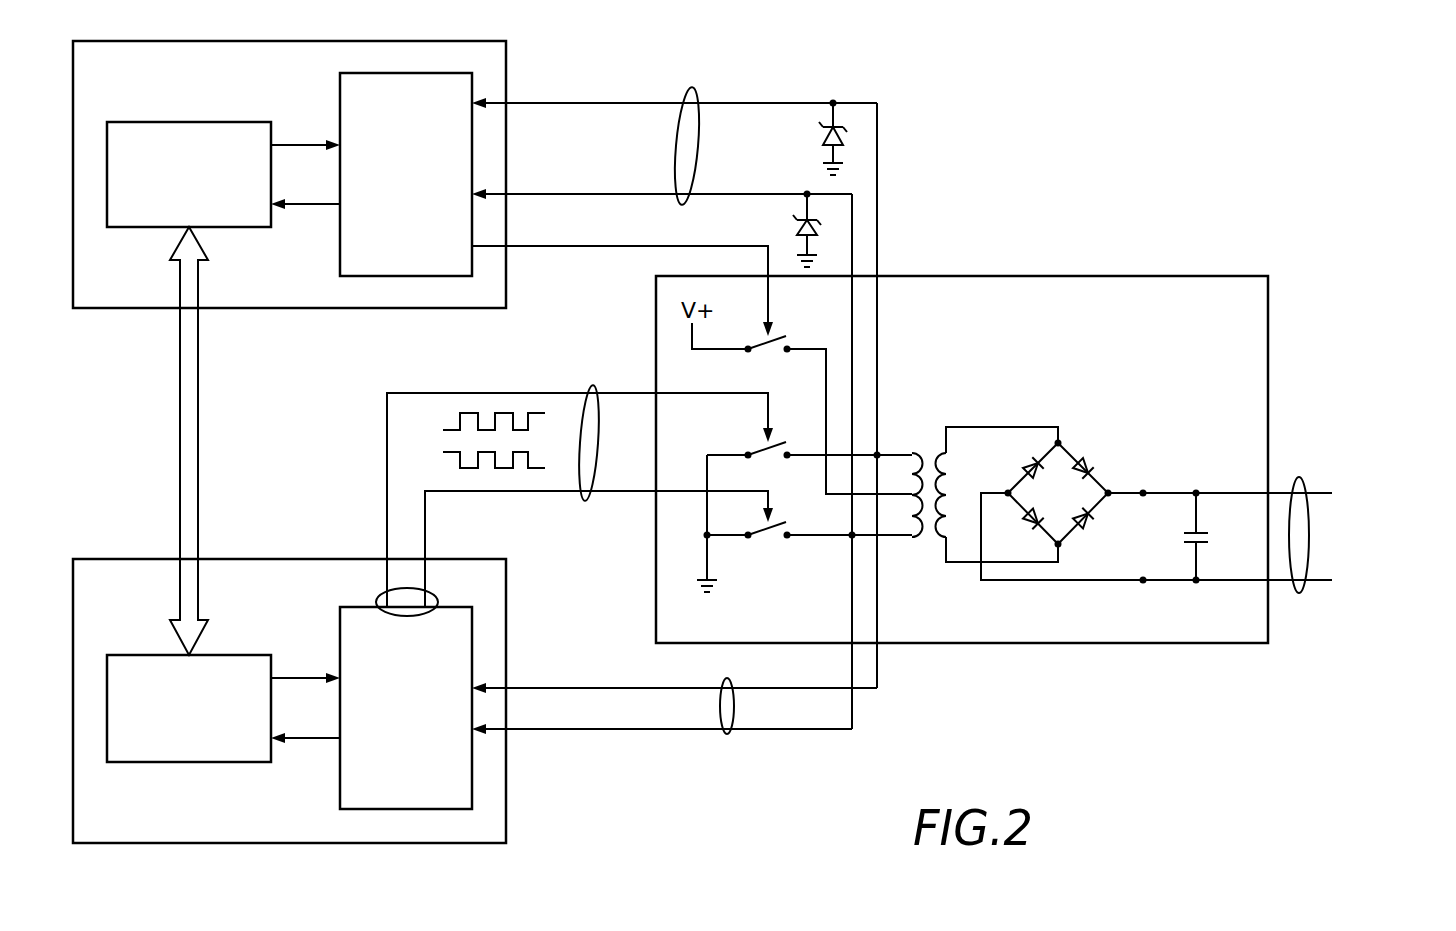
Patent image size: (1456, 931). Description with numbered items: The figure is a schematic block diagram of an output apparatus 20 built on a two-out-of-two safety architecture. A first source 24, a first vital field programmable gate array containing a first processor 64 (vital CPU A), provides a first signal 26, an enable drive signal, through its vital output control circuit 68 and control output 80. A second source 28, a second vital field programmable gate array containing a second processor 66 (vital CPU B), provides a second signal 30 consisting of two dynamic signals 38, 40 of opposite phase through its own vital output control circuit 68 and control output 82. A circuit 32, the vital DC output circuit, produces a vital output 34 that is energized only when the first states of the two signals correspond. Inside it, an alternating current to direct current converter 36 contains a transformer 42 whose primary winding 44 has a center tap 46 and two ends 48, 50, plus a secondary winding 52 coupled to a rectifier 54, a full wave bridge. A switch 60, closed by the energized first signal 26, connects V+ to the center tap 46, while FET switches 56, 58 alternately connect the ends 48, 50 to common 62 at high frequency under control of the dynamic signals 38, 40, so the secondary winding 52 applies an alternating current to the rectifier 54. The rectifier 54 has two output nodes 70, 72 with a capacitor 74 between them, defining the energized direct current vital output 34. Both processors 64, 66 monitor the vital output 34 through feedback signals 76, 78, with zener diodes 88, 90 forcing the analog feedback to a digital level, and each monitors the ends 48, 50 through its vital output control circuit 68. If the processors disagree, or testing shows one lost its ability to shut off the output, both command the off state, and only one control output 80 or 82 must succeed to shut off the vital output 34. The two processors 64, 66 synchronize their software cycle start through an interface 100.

The output apparatus 20 is at (1069, 735).
The first source 24 is at (372, 41).
The first signal 26 is at (640, 247).
The second source 28 is at (506, 793).
The second signal 30 is at (590, 385).
The circuit 32 is at (1140, 276).
The vital output 34 is at (1300, 478).
The alternating current to direct current converter 36 is at (924, 590).
The dynamic signal 38 is at (445, 428).
The dynamic signal 40 is at (445, 453).
The transformer 42 is at (970, 457).
The primary winding 44 is at (914, 452).
The center tap 46 is at (790, 342).
The end 48 is at (788, 458).
The end 50 is at (788, 538).
The secondary winding 52 is at (945, 468).
The rectifier 54 is at (1045, 506).
The switch 56 is at (766, 448).
The switch 58 is at (765, 536).
The switch 60 is at (763, 346).
The common 62 is at (707, 593).
The first processor 64 is at (190, 122).
The second processor 66 is at (212, 762).
The vital output control circuit 68 is at (340, 98).
The output node 70 is at (1144, 490).
The output node 72 is at (1144, 583).
The capacitor 74 is at (1208, 531).
The feedback signal 76 is at (687, 90).
The feedback signal 78 is at (727, 733).
The control output 80 is at (472, 250).
The control output 82 is at (385, 593).
The zener diode 88 is at (824, 134).
The zener diode 90 is at (798, 224).
The interface 100 is at (180, 448).